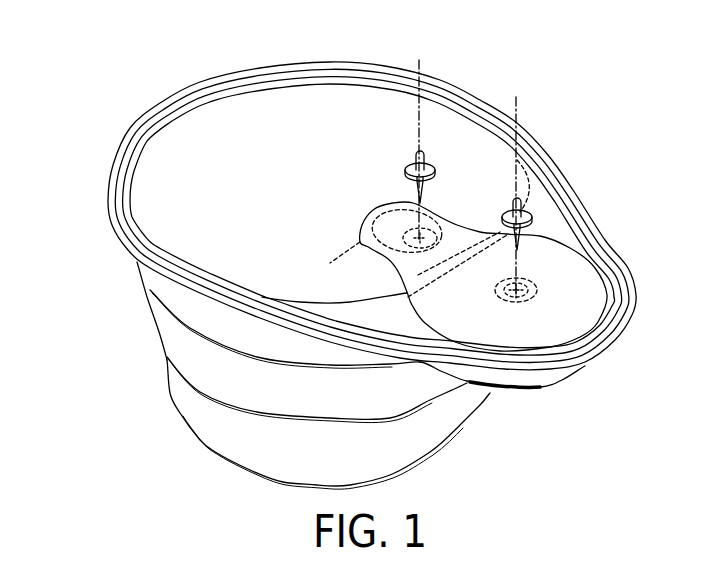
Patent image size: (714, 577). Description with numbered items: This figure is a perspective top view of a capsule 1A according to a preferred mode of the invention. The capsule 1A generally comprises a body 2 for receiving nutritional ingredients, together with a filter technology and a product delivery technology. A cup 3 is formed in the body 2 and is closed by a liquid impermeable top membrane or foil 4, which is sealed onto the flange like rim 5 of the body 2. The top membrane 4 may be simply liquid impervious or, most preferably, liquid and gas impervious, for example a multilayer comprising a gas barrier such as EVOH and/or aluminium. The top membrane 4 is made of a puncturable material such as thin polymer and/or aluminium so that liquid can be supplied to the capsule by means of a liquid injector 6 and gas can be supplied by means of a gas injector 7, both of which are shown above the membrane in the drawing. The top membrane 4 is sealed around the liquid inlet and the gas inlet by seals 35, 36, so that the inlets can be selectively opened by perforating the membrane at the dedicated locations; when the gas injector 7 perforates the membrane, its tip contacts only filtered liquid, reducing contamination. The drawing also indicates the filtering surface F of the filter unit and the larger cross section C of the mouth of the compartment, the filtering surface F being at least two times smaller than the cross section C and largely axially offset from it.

The capsule 1A is at (92, 152).
The body 2 is at (88, 187).
The cup 3 is at (167, 357).
The top membrane 4 is at (457, 119).
The flange like rim 5 is at (630, 323).
The liquid injector 6 is at (496, 228).
The gas injector 7 is at (403, 187).
The seal 35 is at (532, 302).
The seal 36 is at (360, 248).
The cross section of the mouth of the compartment C is at (280, 100).
The filtering surface F is at (563, 322).